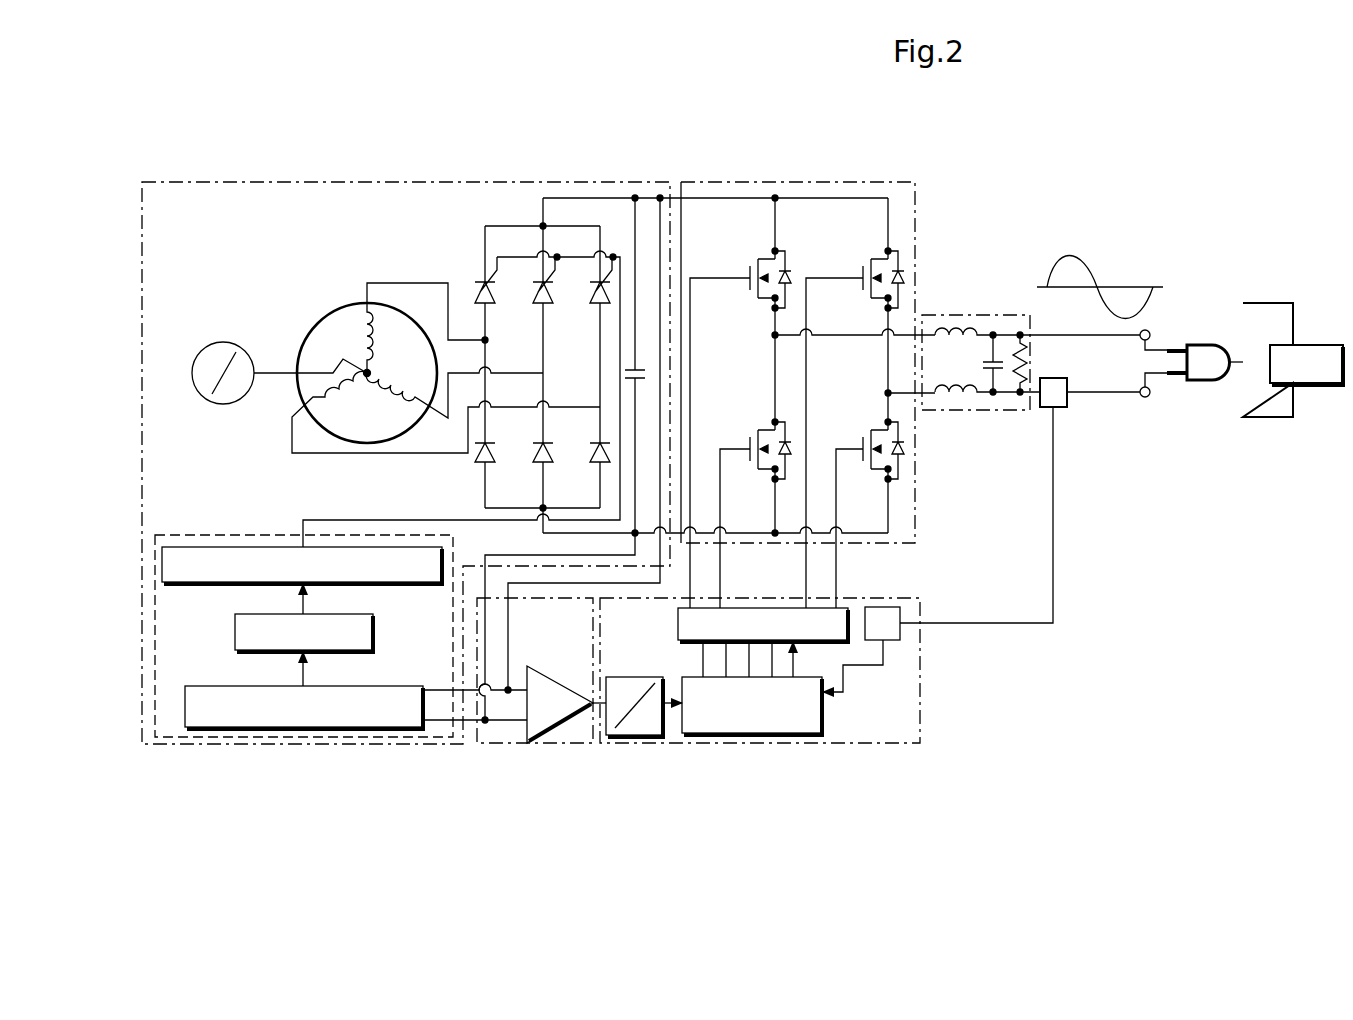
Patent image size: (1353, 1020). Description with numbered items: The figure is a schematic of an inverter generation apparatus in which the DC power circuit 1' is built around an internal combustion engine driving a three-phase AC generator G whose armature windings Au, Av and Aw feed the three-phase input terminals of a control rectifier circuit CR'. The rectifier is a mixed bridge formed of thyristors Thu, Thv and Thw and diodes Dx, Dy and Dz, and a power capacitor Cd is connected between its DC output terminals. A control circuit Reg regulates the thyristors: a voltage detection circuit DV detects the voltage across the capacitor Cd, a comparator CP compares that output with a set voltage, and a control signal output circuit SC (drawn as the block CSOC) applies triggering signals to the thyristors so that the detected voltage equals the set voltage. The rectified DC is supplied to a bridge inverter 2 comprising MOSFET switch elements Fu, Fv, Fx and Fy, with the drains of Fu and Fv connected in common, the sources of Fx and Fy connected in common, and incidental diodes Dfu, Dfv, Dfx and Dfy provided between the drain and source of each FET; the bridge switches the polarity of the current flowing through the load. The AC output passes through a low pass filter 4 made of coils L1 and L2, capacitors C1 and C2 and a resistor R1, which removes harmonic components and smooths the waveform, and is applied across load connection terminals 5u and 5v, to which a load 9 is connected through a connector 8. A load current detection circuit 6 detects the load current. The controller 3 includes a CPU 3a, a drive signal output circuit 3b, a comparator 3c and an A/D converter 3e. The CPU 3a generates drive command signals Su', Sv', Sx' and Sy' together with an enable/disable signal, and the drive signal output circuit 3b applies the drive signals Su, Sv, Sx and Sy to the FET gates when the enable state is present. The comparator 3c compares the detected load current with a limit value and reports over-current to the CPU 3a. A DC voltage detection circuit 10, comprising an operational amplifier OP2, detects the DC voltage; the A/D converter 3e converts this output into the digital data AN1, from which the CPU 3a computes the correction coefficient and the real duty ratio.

The DC power circuit 1' is at (406, 426).
The bridge inverter 2 is at (757, 180).
The controller 3 is at (856, 600).
The CPU 3a is at (823, 727).
The drive signal output circuit 3b is at (678, 626).
The comparator 3c is at (886, 607).
The A/D converter 3e is at (630, 738).
The filter 4 is at (965, 315).
The load connection terminal 5u is at (1149, 330).
The load connection terminal 5v is at (1149, 397).
The load current detection circuit 6 is at (1056, 378).
The connector 8 is at (1205, 343).
The load 9 is at (1310, 343).
The DC voltage detection circuit 10 is at (522, 752).
The three-phase AC generator G is at (318, 315).
The armature winding Au is at (367, 310).
The armature winding Av is at (395, 400).
The armature winding Aw is at (320, 390).
The control rectifier circuit CR' is at (531, 339).
The thyristor Thu is at (480, 293).
The thyristor Thv is at (537, 298).
The thyristor Thw is at (595, 298).
The diode Dx is at (478, 458).
The diode Dy is at (536, 458).
The diode Dz is at (593, 458).
The power capacitor Cd is at (623, 374).
The drive signal Su is at (740, 428).
The drive signal Sv is at (855, 428).
The drive signal Sx is at (753, 513).
The drive signal Sy is at (865, 513).
The switch element Fu is at (762, 262).
The switch element Fv is at (876, 262).
The switch element Fx is at (762, 432).
The switch element Fy is at (876, 432).
The incidental diode Dfu is at (788, 270).
The incidental diode Dfv is at (905, 274).
The incidental diode Dfx is at (788, 462).
The incidental diode Dfy is at (910, 442).
The coil L1 is at (955, 326).
The coil L2 is at (955, 400).
The capacitor C1 is at (978, 362).
The capacitor C2 is at (1002, 386).
The resistor R1 is at (1028, 360).
The control circuit Reg is at (208, 532).
The control signal output circuit SC is at (234, 543).
The control signal output circuit CSOC is at (302, 565).
The comparator CP is at (233, 632).
The voltage detection circuit DV is at (374, 684).
The operational amplifier OP2 is at (566, 704).
The DC voltage data AN1 is at (592, 708).
The drive command signal Su' is at (690, 731).
The drive command signal Sv' is at (734, 731).
The drive command signal Sx' is at (766, 729).
The drive command signal Sy' is at (811, 729).